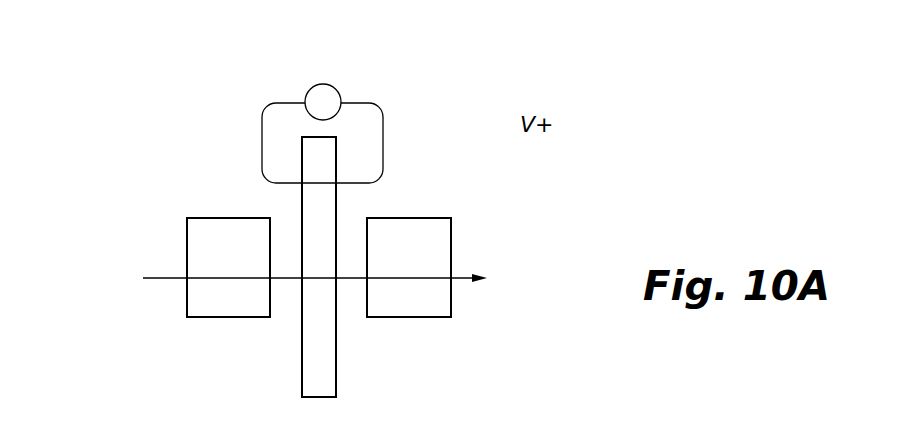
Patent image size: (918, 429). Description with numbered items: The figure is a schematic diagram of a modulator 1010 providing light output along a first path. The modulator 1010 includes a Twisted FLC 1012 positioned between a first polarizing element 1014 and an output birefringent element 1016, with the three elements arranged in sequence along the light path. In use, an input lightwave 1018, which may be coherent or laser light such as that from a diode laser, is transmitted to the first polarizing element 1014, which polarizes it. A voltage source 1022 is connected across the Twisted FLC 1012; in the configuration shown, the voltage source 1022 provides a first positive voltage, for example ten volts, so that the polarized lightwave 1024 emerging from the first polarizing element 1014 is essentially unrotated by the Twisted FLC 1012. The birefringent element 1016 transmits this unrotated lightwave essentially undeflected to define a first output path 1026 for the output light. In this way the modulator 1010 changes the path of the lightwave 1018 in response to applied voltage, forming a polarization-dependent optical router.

The modulator 1010 is at (600, 167).
The Twisted FLC 1012 is at (337, 361).
The first polarizing element 1014 is at (215, 218).
The output birefringent element 1016 is at (408, 218).
The input lightwave 1018 is at (163, 278).
The voltage source 1022 is at (338, 116).
The polarized lightwave 1024 is at (293, 278).
The first output path 1026 is at (458, 278).